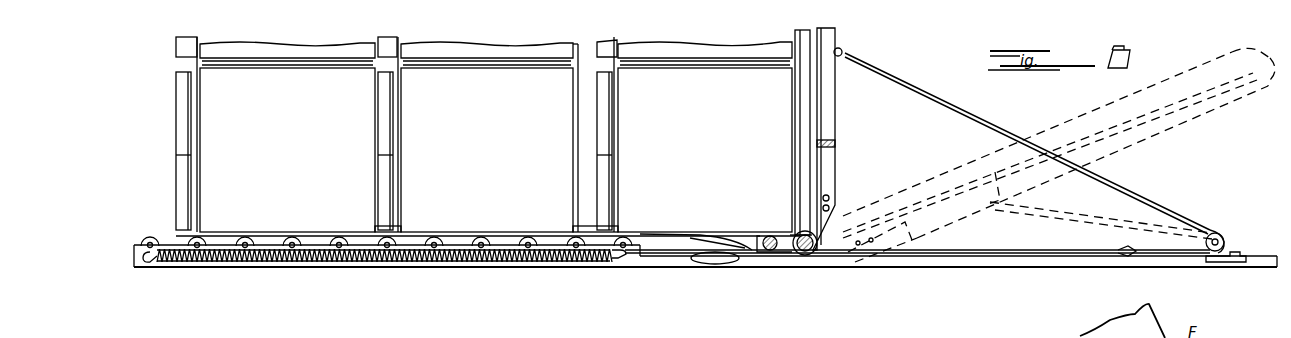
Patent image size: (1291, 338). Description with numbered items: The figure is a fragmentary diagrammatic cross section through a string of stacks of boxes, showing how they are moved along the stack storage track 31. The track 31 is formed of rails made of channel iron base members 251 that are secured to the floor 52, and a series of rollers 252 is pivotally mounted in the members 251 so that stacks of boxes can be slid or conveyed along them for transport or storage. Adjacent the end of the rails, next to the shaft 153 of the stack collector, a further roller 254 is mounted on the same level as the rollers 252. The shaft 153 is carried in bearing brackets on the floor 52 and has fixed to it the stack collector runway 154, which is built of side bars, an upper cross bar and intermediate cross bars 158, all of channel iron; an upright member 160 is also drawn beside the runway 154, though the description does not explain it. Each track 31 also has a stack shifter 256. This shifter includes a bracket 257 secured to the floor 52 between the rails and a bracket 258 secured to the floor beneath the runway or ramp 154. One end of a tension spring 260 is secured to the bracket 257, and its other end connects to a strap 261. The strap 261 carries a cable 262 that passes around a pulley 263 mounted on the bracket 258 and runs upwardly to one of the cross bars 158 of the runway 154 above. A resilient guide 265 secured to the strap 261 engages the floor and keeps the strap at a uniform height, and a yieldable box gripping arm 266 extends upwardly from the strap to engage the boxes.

The stack storage track 31 is at (387, 293).
The floor 52 is at (1032, 264).
The shaft 153 is at (812, 254).
The stack collector runway 154 is at (843, 109).
The intermediate cross bars 158 is at (841, 46).
The post 160 is at (797, 124).
The channel iron base members 251 is at (237, 228).
The rollers 252 is at (330, 237).
The roller 254 is at (773, 222).
The stack shifter 256 is at (693, 283).
The bracket 257 is at (148, 264).
The bracket 258 is at (1214, 264).
The tension spring 260 is at (464, 257).
The strap 261 is at (872, 260).
The cable 262 is at (1130, 193).
The pulley 263 is at (1227, 240).
The resilient guide 265 is at (720, 264).
The yieldable box gripping arm 266 is at (746, 262).